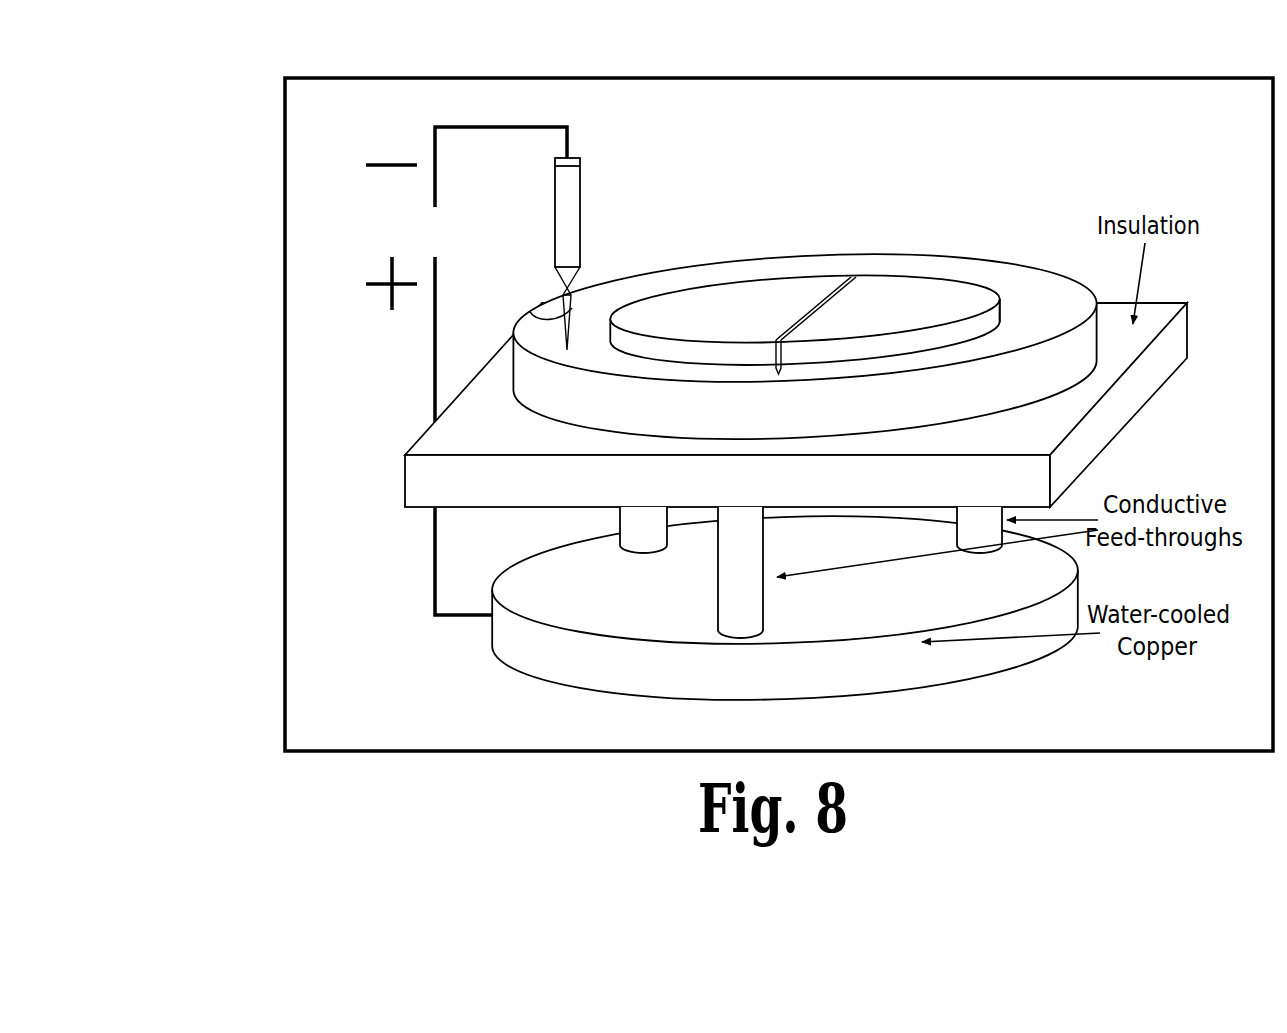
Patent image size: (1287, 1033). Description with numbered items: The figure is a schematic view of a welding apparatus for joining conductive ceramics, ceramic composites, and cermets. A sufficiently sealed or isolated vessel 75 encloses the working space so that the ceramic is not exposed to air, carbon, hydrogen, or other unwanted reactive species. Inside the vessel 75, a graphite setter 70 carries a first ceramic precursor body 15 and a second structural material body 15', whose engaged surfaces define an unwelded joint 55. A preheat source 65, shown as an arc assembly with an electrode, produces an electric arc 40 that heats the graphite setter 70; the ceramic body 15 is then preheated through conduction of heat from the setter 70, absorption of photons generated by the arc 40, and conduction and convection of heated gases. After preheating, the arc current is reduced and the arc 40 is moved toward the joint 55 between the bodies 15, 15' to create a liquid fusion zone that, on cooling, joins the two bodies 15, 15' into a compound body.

The sealed or isolated vessel 75 is at (775, 78).
The preheat source 65 is at (370, 118).
The unwelded parent material joint 55 is at (596, 214).
The electric arc 40 is at (530, 312).
The ceramic precursor body 15 is at (805, 270).
The second structural material body 15' is at (888, 276).
The graphite setter 70 is at (978, 261).